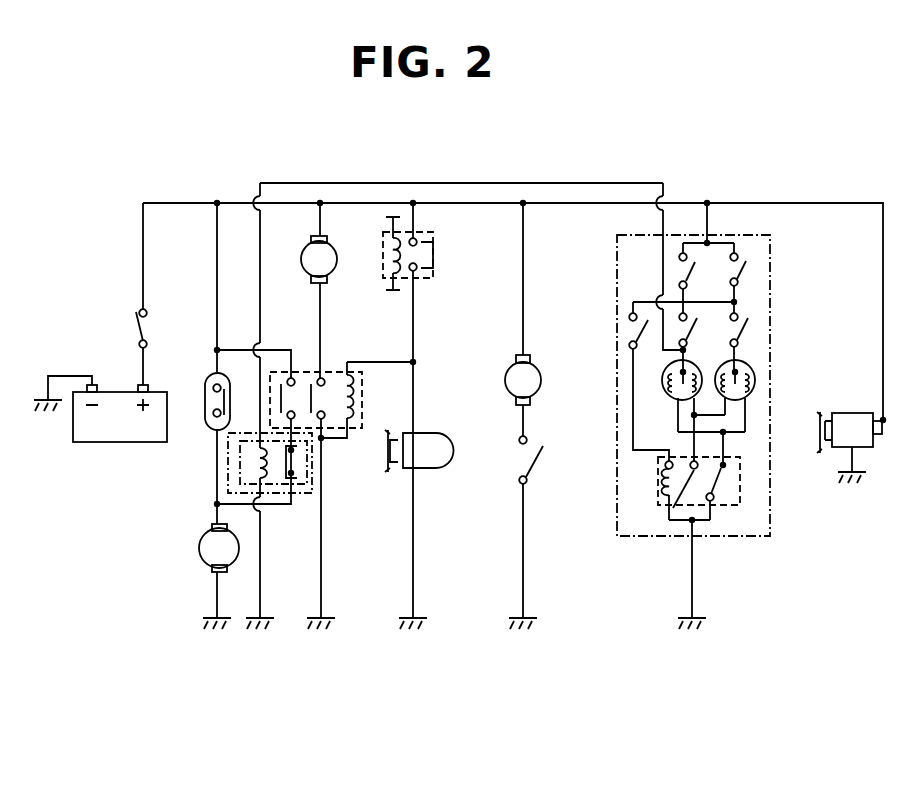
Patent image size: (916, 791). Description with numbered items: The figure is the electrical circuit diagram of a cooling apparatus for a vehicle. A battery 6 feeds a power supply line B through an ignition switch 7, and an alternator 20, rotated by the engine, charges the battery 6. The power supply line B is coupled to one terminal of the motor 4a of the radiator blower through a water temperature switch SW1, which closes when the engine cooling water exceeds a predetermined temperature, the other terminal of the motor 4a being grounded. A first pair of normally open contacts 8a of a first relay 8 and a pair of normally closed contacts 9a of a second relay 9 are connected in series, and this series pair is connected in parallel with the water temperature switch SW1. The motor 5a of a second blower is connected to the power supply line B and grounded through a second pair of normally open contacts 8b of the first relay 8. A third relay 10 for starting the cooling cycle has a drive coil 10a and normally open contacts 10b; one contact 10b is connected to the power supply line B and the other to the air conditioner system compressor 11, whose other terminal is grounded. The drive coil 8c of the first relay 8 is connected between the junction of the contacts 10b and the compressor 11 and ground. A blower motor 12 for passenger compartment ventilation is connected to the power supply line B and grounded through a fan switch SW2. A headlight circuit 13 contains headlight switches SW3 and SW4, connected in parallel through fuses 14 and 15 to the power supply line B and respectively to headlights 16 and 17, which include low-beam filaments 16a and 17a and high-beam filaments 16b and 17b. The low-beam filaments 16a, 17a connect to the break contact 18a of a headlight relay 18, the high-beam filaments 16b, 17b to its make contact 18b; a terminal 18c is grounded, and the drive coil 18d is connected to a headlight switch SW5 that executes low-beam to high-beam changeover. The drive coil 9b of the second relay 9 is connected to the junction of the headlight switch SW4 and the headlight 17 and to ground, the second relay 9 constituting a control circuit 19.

The power supply line B is at (206, 201).
The motor of radiator blower 4a is at (202, 563).
The motor of blower 5a is at (331, 247).
The battery 6 is at (95, 443).
The ignition switch 7 is at (150, 323).
The first relay 8 is at (334, 376).
The first pair of normally open contacts 8a is at (291, 378).
The second pair of normally open contacts 8b is at (321, 378).
The drive coil of first relay 8c is at (360, 383).
The second relay 9 is at (300, 485).
The normally closed contacts 9a is at (300, 463).
The drive coil of second relay 9b is at (263, 472).
The third relay 10 is at (411, 262).
The drive coil of third relay 10a is at (385, 270).
The normally open contacts of third relay 10b is at (434, 241).
The air conditioner system compressor 11 is at (433, 469).
The blower motor 12 is at (541, 375).
The headlight circuit 13 is at (770, 520).
The fuse 14 is at (742, 272).
The fuse 15 is at (688, 271).
The headlight 16 is at (768, 390).
The low-beam filament 16a is at (756, 383).
The high-beam filament 16b is at (752, 364).
The headlight 17 is at (658, 385).
The low-beam filament 17a is at (661, 383).
The high-beam filament 17b is at (705, 360).
The headlight relay 18 is at (692, 509).
The break contact 18a is at (742, 462).
The make contact 18b is at (673, 512).
The terminal of headlight relay 18c is at (713, 485).
The drive coil of headlight relay 18d is at (660, 486).
The control circuit 19 is at (314, 491).
The alternator 20 is at (860, 452).
The water temperature switch SW1 is at (203, 414).
The fan switch SW2 is at (521, 460).
The headlight switch SW3 is at (748, 312).
The headlight switch SW4 is at (678, 323).
The headlight switch SW5 is at (630, 330).